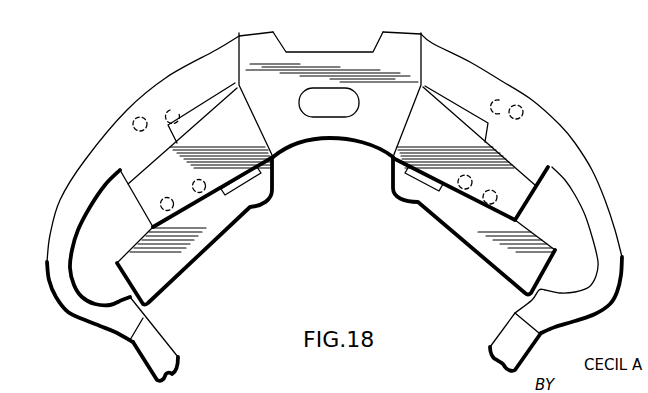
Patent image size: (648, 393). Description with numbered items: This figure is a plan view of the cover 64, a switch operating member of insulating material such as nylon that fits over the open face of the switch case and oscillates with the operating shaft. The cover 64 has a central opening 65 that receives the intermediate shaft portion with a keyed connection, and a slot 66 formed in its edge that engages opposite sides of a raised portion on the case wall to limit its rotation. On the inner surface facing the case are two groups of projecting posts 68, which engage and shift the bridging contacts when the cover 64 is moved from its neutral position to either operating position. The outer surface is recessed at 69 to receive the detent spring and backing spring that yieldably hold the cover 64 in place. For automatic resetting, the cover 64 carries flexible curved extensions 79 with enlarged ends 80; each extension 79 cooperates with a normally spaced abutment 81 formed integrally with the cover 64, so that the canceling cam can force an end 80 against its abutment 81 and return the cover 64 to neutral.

The cover 64 is at (579, 143).
The central opening 65 is at (356, 104).
The slot 66 is at (283, 43).
The projecting posts 68 is at (138, 118).
The recess 69 is at (512, 170).
The flexible curved extensions 79 is at (55, 290).
The enlarged ends 80 is at (173, 372).
The abutment 81 is at (163, 285).